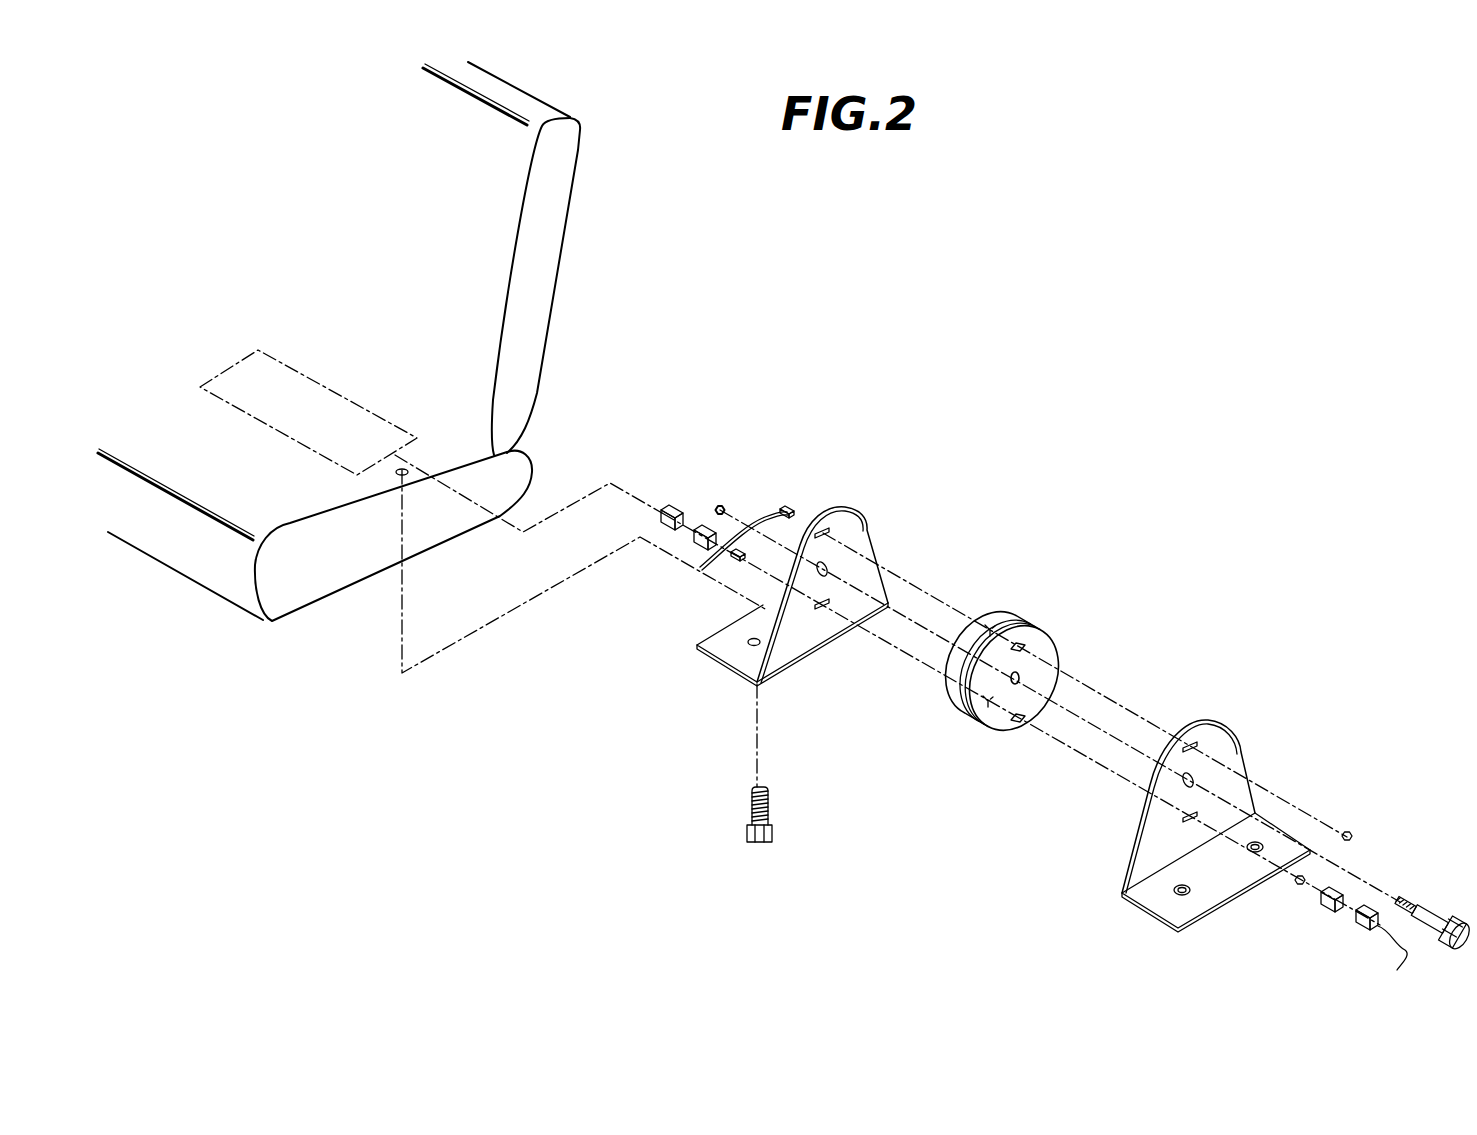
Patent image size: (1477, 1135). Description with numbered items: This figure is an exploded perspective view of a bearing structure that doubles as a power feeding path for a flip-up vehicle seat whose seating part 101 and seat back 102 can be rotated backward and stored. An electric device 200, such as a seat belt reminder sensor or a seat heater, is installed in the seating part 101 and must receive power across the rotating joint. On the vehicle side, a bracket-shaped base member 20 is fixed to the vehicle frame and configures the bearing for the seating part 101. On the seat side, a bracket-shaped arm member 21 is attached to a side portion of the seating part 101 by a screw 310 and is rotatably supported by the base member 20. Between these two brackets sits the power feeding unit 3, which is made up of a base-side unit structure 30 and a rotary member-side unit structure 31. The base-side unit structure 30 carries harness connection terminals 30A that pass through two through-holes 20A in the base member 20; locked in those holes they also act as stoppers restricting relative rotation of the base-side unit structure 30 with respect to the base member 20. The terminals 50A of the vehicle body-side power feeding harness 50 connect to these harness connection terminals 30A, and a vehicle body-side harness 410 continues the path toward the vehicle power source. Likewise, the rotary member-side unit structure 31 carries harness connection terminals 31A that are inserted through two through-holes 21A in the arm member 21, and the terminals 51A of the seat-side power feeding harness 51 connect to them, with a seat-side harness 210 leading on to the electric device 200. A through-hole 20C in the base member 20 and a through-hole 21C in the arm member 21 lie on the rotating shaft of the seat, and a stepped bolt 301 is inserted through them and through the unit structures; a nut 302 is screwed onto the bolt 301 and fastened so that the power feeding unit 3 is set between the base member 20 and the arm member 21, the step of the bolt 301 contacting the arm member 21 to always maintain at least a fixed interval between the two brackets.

The seating part 101 is at (283, 574).
The seat back 102 is at (556, 258).
The electric device 200 is at (338, 392).
The power feeding unit 3 is at (972, 753).
The base member 20 is at (1137, 813).
The through-holes 20A is at (1195, 742).
The through-hole 20C is at (1192, 776).
The arm member 21 is at (757, 584).
The through-holes 21A is at (826, 527).
The through-hole 21C is at (828, 565).
The base-side unit structure 30 is at (1050, 652).
The harness connection terminals 30A is at (1027, 648).
The rotary member-side unit structure 31 is at (1008, 613).
The harness connection terminals 31A is at (990, 625).
The power feeding harness 50 is at (1320, 903).
The terminals 50A is at (1301, 875).
The power feeding harness 51 is at (708, 528).
The terminals 51A is at (702, 568).
The seat-side harness 210 is at (672, 506).
The stepped bolt 301 is at (1432, 922).
The nut 302 is at (722, 507).
The screw 310 is at (752, 803).
The vehicle body-side harness 410 is at (1363, 925).